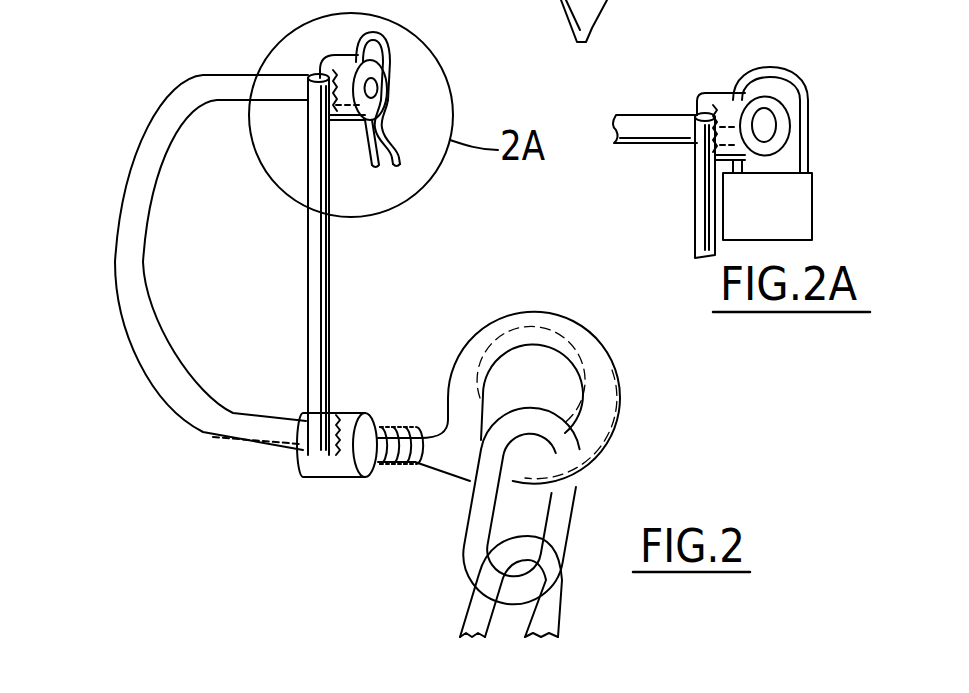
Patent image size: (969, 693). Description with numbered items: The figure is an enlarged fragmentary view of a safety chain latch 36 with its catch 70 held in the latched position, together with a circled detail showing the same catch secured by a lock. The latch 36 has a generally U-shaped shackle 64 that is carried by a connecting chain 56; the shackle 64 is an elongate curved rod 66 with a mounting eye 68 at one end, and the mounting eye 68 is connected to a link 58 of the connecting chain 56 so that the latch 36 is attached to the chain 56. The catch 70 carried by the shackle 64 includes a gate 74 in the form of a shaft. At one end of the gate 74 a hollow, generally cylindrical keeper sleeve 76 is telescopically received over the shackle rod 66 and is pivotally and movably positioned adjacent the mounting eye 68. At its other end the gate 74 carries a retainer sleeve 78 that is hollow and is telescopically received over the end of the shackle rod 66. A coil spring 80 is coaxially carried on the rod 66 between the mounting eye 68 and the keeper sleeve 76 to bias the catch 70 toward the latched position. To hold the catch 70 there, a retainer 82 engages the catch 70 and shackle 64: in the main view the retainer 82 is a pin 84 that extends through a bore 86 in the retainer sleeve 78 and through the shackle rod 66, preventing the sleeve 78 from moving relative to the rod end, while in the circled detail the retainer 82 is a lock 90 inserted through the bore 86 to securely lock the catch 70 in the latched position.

In FIG. 2, the latch 36 is at (146, 446).
In FIG. 2, the connecting chain 56 is at (546, 617).
In FIG. 2, the link 58 is at (565, 510).
In FIG. 2, the shackle 64 is at (116, 302).
In FIG. 2, the rod 66 is at (147, 287).
In FIG. 2A, the rod 66 is at (650, 118).
In FIG. 2, the mounting eye 68 is at (587, 355).
In FIG. 2, the catch 70 is at (348, 271).
In FIG. 2, the gate 74 is at (326, 343).
In FIG. 2A, the gate 74 is at (700, 202).
In FIG. 2, the keeper sleeve 76 is at (325, 470).
In FIG. 2, the retainer sleeve 78 is at (332, 56).
In FIG. 2A, the retainer sleeve 78 is at (720, 93).
In FIG. 2, the spring 80 is at (396, 474).
In FIG. 2, the retainer 82 is at (387, 135).
In FIG. 2A, the retainer 82 is at (812, 167).
In FIG. 2, the pin 84 is at (401, 163).
In FIG. 2, the bore 86 is at (351, 53).
In FIG. 2A, the bore 86 is at (733, 95).
In FIG. 2A, the lock 90 is at (787, 200).